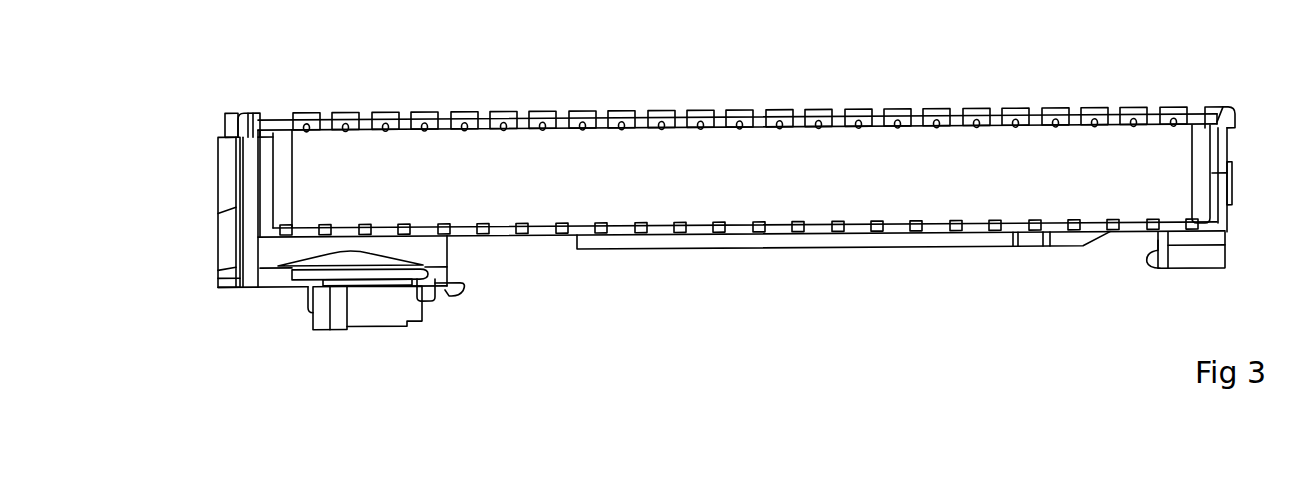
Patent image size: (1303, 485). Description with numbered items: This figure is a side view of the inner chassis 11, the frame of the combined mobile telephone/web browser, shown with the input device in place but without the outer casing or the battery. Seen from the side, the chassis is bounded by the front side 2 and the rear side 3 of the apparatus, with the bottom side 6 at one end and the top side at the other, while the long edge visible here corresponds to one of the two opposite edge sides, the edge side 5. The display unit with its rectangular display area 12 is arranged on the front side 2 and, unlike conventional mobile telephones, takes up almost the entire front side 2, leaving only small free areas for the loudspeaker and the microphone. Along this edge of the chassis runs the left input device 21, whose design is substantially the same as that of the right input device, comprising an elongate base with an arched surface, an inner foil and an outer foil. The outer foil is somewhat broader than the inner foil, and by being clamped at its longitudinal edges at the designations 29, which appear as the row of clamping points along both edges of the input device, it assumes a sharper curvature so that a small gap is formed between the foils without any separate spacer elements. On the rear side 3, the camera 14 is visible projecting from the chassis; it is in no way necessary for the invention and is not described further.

The front side 2 is at (1222, 114).
The rear side 3 is at (512, 237).
The edge side 5 is at (219, 184).
The bottom side 6 is at (1230, 228).
The inner chassis 11 is at (788, 266).
The display area 12 is at (557, 113).
The camera 14 is at (313, 317).
The left input device 21 is at (1078, 153).
The clamping designations 29 is at (658, 116).